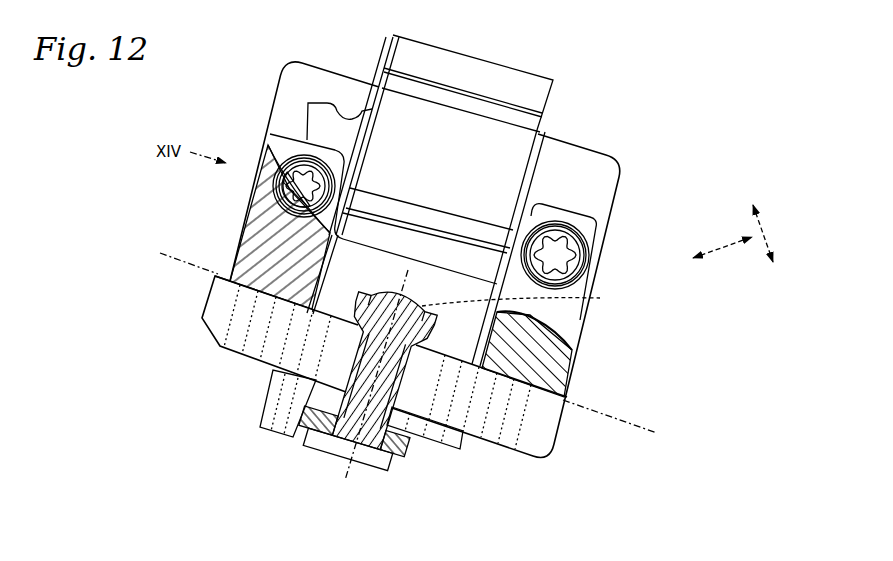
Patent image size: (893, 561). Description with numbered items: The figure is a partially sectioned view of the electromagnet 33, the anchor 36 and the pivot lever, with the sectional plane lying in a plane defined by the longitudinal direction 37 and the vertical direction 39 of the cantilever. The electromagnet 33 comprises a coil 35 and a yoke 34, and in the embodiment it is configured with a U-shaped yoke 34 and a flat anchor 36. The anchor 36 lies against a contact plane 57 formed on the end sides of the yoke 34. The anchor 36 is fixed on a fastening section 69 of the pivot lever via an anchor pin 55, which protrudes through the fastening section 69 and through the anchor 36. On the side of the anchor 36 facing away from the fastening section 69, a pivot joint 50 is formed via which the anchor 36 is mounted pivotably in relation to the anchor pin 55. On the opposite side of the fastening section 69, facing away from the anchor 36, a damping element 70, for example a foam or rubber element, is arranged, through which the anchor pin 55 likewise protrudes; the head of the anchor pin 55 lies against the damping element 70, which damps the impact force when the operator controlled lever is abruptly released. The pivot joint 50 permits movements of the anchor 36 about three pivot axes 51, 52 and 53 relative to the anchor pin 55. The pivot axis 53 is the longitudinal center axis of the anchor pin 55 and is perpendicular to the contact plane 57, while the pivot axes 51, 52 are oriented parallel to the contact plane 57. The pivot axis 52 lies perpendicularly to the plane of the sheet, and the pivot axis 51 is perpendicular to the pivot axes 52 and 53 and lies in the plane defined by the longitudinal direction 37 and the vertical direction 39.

The electromagnet 33 is at (233, 237).
The yoke 34 is at (580, 170).
The coil 35 is at (485, 77).
The anchor 36 is at (522, 418).
The longitudinal direction 37 is at (722, 242).
The vertical direction 39 is at (771, 233).
The pivot joint 50 is at (356, 329).
The pivot axis 51 is at (447, 331).
The pivot axis 52 is at (600, 298).
The pivot axis 53 is at (338, 484).
The anchor pin 55 is at (325, 452).
The contact plane 57 is at (600, 421).
The fastening section 69 is at (260, 417).
The damping element 70 is at (420, 455).